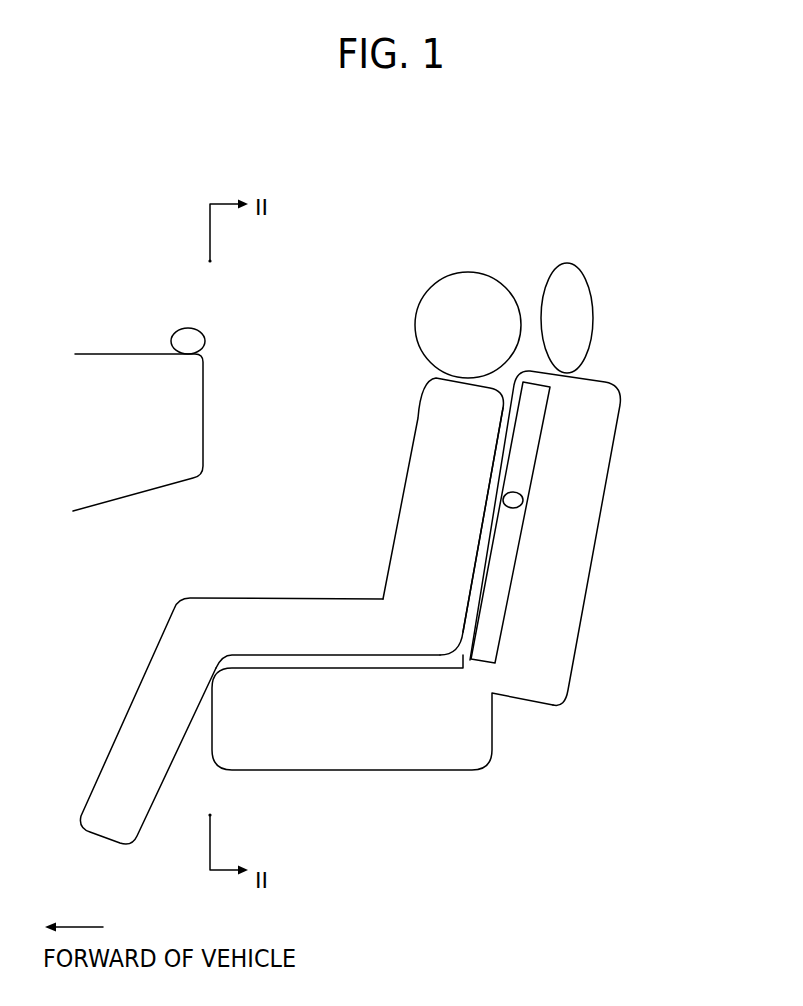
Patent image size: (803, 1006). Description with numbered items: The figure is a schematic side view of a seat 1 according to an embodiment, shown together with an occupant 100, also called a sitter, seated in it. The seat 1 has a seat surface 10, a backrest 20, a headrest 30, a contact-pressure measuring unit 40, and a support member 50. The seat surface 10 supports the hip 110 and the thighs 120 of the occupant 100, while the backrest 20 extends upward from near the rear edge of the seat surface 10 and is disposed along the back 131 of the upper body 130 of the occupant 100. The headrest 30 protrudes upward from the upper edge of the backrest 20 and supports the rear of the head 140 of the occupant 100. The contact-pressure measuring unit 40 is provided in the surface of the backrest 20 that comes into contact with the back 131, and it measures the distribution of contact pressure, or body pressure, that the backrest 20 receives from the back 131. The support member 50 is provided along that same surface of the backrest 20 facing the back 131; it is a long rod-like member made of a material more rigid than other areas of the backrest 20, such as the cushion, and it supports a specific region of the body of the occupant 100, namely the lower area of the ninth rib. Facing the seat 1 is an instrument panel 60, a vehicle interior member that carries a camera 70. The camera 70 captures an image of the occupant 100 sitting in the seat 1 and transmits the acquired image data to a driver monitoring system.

The seat 1 is at (622, 335).
The seat surface 10 is at (355, 753).
The backrest 20 is at (617, 420).
The headrest 30 is at (581, 272).
The contact-pressure measuring unit 40 is at (510, 598).
The support member 50 is at (527, 502).
The instrument panel 60 is at (107, 353).
The camera 70 is at (174, 335).
The occupant 100 is at (305, 542).
The hip 110 is at (430, 647).
The thighs 120 is at (264, 645).
The upper body 130 is at (416, 427).
The back 131 is at (495, 463).
The head 140 is at (453, 273).